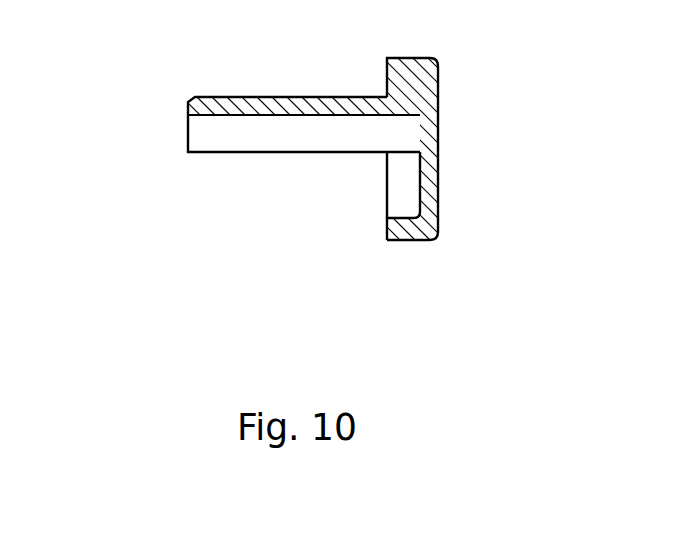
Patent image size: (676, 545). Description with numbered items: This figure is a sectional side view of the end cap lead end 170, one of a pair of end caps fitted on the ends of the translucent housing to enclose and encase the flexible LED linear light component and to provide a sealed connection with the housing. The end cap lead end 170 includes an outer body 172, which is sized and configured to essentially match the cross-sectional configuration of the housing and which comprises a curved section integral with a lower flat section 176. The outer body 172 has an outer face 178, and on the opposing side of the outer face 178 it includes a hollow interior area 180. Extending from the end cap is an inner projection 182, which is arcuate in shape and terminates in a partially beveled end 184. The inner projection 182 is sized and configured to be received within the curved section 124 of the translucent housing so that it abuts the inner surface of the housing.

The end cap lead end 170 is at (220, 177).
The partially beveled end 184 is at (192, 101).
The inner projection 182 is at (221, 97).
The curved section 124 is at (438, 148).
The outer body 172 is at (440, 106).
The outer face 178 is at (440, 193).
The lower flat section 176 is at (387, 230).
The hollow interior area 180 is at (399, 183).